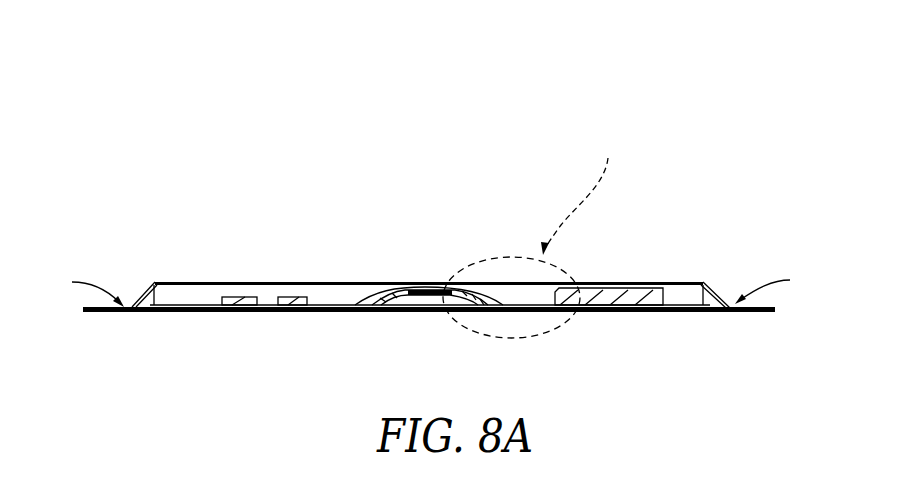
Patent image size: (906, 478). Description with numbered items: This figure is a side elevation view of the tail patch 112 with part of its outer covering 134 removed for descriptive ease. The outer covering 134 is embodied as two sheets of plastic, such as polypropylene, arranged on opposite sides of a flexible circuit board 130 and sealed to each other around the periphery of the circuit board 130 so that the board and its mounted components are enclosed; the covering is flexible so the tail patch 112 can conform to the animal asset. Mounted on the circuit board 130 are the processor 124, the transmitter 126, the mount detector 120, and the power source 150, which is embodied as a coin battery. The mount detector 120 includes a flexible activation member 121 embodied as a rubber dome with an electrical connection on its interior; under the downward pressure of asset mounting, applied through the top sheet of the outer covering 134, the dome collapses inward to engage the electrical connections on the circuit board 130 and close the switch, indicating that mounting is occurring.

The tail patch 112 is at (728, 118).
The mount detector 120 is at (490, 291).
The flexible activation member 121 is at (393, 288).
The processor 124 is at (240, 296).
The transmitter 126 is at (295, 296).
The circuit board 130 is at (337, 290).
The outer covering 134 is at (677, 283).
The power source 150 is at (596, 294).